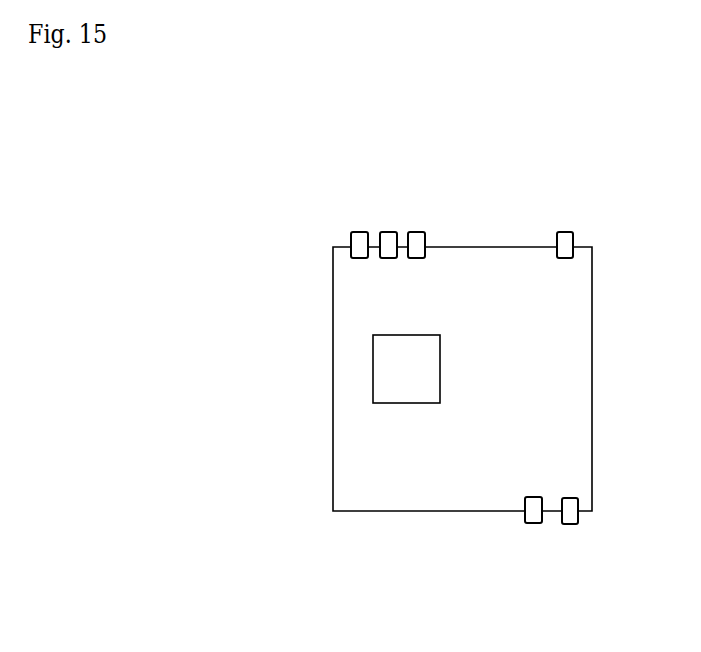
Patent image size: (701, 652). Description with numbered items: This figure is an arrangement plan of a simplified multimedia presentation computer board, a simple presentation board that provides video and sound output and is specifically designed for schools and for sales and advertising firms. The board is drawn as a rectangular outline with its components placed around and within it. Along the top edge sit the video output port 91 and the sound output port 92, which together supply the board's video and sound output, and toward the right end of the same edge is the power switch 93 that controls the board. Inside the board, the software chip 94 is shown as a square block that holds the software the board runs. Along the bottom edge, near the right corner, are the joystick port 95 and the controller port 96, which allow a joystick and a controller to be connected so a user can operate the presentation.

The video output port 91 is at (358, 240).
The sound output port 92 is at (416, 240).
The power switch 93 is at (566, 238).
The software chip 94 is at (373, 383).
The joystick port 95 is at (529, 525).
The controller port 96 is at (568, 528).